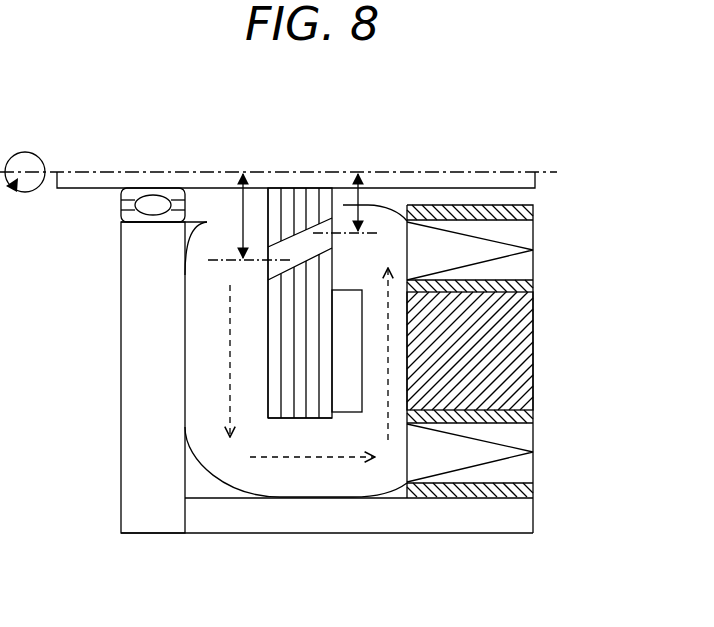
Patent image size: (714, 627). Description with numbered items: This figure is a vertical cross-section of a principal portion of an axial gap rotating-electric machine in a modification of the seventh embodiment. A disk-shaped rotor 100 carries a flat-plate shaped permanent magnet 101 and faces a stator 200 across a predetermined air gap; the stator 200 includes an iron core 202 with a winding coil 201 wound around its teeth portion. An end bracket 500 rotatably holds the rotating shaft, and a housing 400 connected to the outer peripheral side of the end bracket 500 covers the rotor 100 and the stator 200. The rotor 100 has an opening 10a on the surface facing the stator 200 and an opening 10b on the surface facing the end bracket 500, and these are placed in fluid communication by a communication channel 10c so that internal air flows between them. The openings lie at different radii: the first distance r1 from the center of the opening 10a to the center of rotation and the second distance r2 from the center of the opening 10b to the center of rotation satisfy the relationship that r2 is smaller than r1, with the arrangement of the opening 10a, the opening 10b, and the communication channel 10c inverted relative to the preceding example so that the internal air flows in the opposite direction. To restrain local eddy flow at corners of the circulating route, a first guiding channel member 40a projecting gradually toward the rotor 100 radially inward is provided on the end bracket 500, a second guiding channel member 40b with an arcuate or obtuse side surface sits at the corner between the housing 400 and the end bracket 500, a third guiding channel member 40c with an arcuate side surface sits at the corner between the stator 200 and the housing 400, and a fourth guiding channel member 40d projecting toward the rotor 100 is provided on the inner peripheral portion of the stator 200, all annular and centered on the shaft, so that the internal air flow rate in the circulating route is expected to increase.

The opening 10a is at (327, 218).
The opening 10b is at (268, 268).
The communication channel 10c is at (297, 250).
The first guiding channel member 40a is at (185, 233).
The second guiding channel member 40b is at (197, 475).
The third guiding channel member 40c is at (393, 498).
The fourth guiding channel member 40d is at (395, 205).
The rotor 100 is at (297, 421).
The permanent magnet 101 is at (348, 405).
The stator 200 is at (535, 398).
The winding coil 201 is at (520, 268).
The iron core 202 is at (522, 336).
The housing 400 is at (221, 535).
The end bracket 500 is at (120, 353).
The first distance r1 is at (358, 170).
The second distance r2 is at (243, 170).